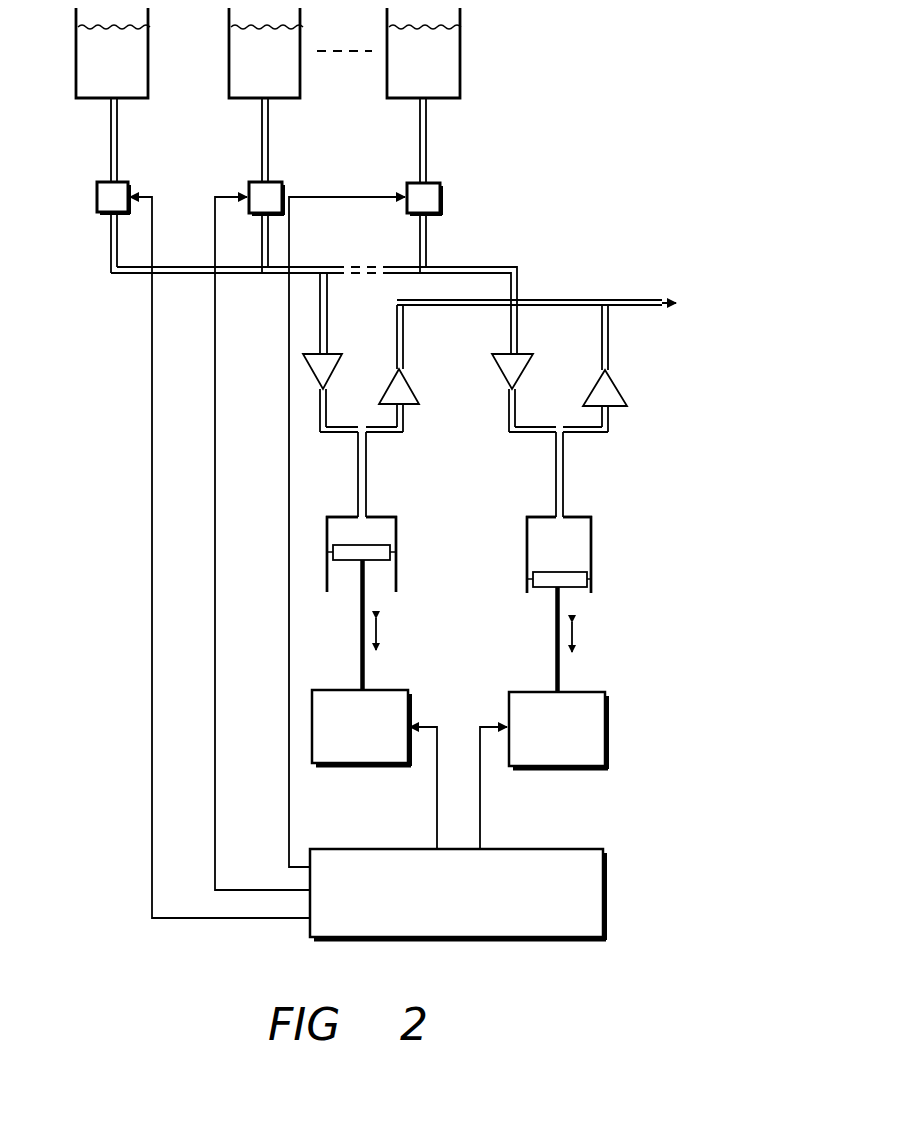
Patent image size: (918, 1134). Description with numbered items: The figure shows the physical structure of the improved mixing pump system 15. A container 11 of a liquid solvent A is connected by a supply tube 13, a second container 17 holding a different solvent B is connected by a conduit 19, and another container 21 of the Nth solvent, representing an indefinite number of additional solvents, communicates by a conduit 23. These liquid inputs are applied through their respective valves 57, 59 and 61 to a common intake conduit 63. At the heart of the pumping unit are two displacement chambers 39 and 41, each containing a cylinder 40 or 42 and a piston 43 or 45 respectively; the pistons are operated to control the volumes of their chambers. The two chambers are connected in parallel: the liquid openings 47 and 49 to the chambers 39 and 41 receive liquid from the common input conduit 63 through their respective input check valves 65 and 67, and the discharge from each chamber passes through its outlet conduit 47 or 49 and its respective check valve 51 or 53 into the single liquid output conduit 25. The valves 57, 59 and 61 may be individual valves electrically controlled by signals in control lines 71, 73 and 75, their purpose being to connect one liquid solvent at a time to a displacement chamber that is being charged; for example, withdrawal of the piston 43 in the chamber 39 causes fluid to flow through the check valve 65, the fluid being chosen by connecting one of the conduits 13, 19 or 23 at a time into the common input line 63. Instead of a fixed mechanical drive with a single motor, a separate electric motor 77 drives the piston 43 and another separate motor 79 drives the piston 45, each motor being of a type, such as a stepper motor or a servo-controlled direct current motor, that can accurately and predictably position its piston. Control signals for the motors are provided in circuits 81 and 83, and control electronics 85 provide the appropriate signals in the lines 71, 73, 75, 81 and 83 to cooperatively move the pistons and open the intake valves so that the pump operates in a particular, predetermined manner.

The container 11 is at (148, 47).
The second container 17 is at (301, 41).
The container 21 is at (460, 42).
The supply tube 13 is at (118, 129).
The conduit 19 is at (268, 129).
The conduit 23 is at (426, 130).
The valve 57 is at (100, 184).
The valve 59 is at (250, 184).
The valve 61 is at (410, 185).
The common intake conduit 63 is at (328, 265).
The input check valve 65 is at (326, 354).
The check valve 51 is at (412, 387).
The outlet conduit 47 is at (366, 476).
The liquid output conduit 25 is at (643, 300).
The input check valve 67 is at (523, 373).
The check valve 53 is at (617, 388).
The outlet conduit 49 is at (563, 477).
The cylinder 40 is at (343, 516).
The displacement chamber 39 is at (398, 523).
The piston 43 is at (381, 563).
The cylinder 42 is at (527, 555).
The displacement chamber 41 is at (573, 545).
The piston 45 is at (573, 583).
The electric motor 77 is at (395, 692).
The motor 79 is at (597, 692).
The circuit 81 is at (437, 812).
The circuit 83 is at (480, 817).
The control electronics 85 is at (605, 898).
The control line 71 is at (152, 570).
The control line 73 is at (215, 608).
The control line 75 is at (289, 637).
The mixing pump system 15 is at (717, 577).